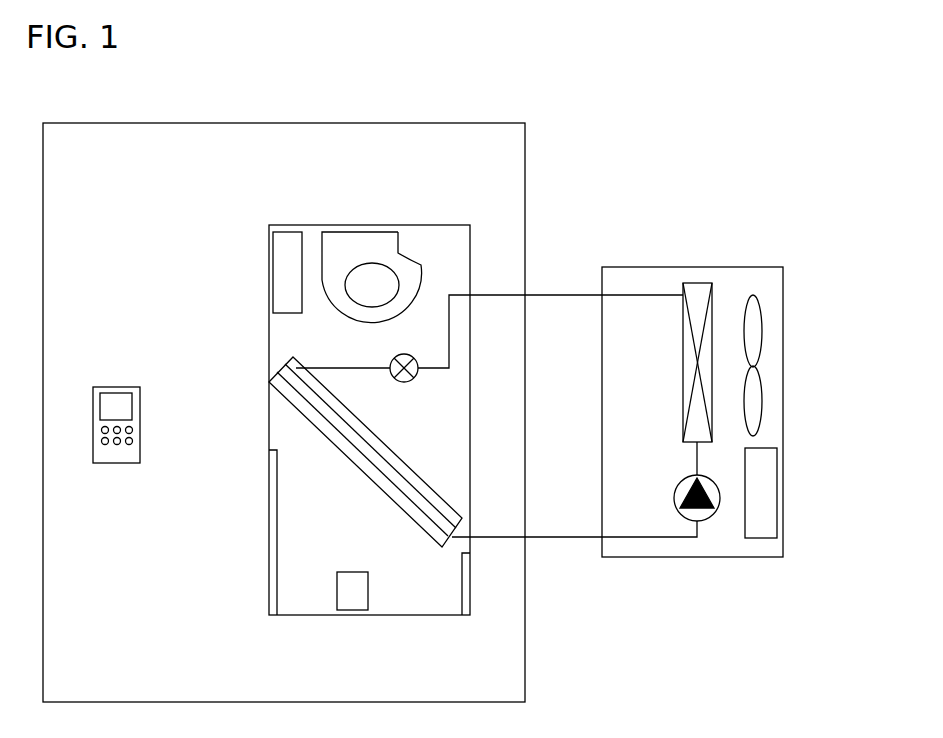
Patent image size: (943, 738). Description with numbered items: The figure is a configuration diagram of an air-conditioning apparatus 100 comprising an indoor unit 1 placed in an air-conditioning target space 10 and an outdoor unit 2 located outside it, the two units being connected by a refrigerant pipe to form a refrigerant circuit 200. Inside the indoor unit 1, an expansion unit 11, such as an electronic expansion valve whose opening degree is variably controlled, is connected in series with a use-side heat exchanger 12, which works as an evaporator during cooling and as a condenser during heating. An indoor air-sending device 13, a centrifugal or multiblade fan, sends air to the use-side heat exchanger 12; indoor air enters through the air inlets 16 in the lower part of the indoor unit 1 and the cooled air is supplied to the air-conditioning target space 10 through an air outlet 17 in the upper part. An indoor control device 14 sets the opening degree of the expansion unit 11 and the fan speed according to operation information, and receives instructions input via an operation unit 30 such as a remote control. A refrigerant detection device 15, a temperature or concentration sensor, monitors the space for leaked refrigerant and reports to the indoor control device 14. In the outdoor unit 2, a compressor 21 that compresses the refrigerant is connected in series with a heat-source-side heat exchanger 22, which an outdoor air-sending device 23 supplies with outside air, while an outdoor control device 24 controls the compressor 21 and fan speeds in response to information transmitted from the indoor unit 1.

The indoor unit 1 is at (458, 225).
The outdoor unit 2 is at (731, 267).
The air-conditioning target space 10 is at (147, 183).
The expansion unit 11 is at (411, 383).
The use-side heat exchanger 12 is at (422, 482).
The indoor air-sending device 13 is at (424, 274).
The indoor control device 14 is at (268, 273).
The refrigerant detection device 15 is at (356, 618).
The air inlet 16 is at (266, 568).
The air outlet 17 is at (355, 225).
The compressor 21 is at (678, 488).
The heat-source-side heat exchanger 22 is at (683, 373).
The outdoor air-sending device 23 is at (760, 328).
The outdoor control device 24 is at (783, 487).
The operation unit 30 is at (105, 387).
The air-conditioning apparatus 100 is at (607, 213).
The refrigerant circuit 200 is at (579, 538).